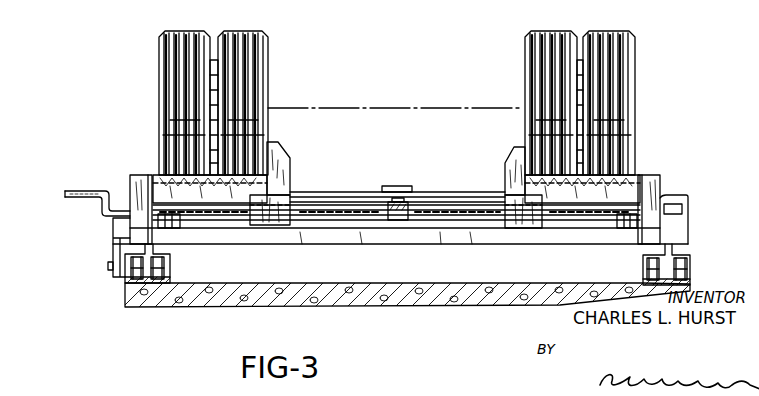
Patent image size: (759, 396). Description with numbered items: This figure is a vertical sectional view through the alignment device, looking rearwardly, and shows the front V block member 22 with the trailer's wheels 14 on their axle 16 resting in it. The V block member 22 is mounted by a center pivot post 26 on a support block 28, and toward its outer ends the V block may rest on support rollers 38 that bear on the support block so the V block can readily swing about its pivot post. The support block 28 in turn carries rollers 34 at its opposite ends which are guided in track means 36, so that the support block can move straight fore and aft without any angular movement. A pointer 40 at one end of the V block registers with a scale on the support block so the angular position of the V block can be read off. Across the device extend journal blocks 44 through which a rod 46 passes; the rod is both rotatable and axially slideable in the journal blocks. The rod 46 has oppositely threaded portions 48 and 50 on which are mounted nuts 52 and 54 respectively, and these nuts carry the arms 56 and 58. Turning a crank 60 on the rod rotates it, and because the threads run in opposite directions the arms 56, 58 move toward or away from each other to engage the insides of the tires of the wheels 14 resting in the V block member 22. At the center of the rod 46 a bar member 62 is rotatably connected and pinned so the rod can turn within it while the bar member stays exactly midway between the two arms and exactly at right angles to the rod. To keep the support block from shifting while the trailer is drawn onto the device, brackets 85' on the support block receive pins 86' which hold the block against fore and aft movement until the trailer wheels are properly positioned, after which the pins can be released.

The wheels 14 is at (262, 95).
The axle 16 is at (386, 107).
The V block member 22 is at (345, 192).
The center pivot post 26 is at (402, 186).
The support block 28 is at (322, 236).
The rollers 34 is at (158, 272).
The track means 36 is at (130, 264).
The support rollers 38 is at (173, 230).
The pointer 40 is at (688, 197).
The journal blocks 44 is at (133, 215).
The rod 46 is at (446, 201).
The oppositely threaded portion 48 is at (240, 228).
The oppositely threaded portion 50 is at (498, 222).
The nut 52 is at (283, 228).
The nut 54 is at (535, 228).
The arm 56 is at (285, 166).
The arm 58 is at (507, 170).
The crank 60 is at (105, 191).
The bar member 62 is at (401, 222).
The brackets 85' is at (85, 256).
The pins 86' is at (78, 289).